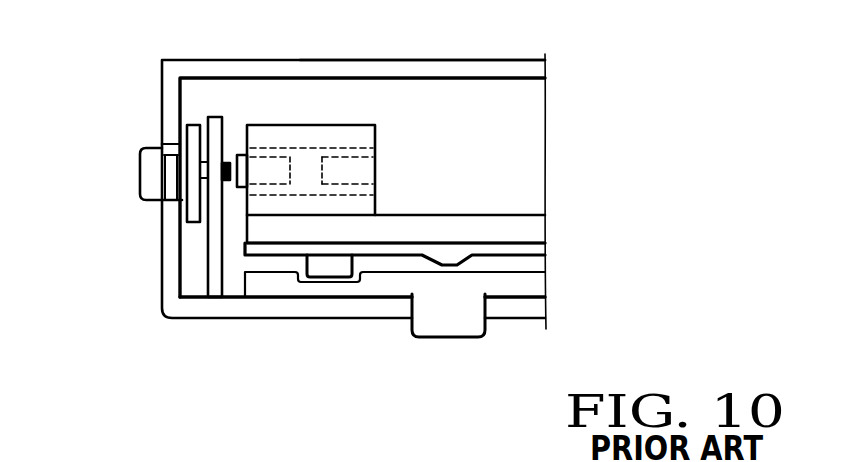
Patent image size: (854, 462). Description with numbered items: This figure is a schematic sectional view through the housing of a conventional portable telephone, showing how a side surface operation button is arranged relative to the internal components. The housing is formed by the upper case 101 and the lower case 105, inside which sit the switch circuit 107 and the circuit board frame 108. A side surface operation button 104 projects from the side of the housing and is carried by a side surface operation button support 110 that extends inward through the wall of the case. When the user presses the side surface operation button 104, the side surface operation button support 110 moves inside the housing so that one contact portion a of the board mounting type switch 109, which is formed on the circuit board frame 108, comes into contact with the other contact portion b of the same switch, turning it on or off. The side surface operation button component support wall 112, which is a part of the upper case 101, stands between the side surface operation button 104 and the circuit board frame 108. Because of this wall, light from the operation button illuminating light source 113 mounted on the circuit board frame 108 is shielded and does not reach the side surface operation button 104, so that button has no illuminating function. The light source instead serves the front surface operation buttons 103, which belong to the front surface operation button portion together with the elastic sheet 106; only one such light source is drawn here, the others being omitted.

The upper case 101 is at (284, 320).
The front surface operation buttons 103 is at (447, 337).
The side surface operation buttons 104 is at (140, 175).
The lower case 105 is at (411, 58).
The elastic sheet 106 is at (537, 280).
The switch circuit 107 is at (540, 250).
The circuit board frame 108 is at (533, 230).
The board mounting type switch 109 is at (299, 125).
The side surface operation button support 110 is at (190, 124).
The side surface operation button component support wall 112 is at (215, 222).
The operation button illuminating light source 113 is at (338, 272).
The contact portion a is at (238, 153).
The contact portion b is at (347, 173).